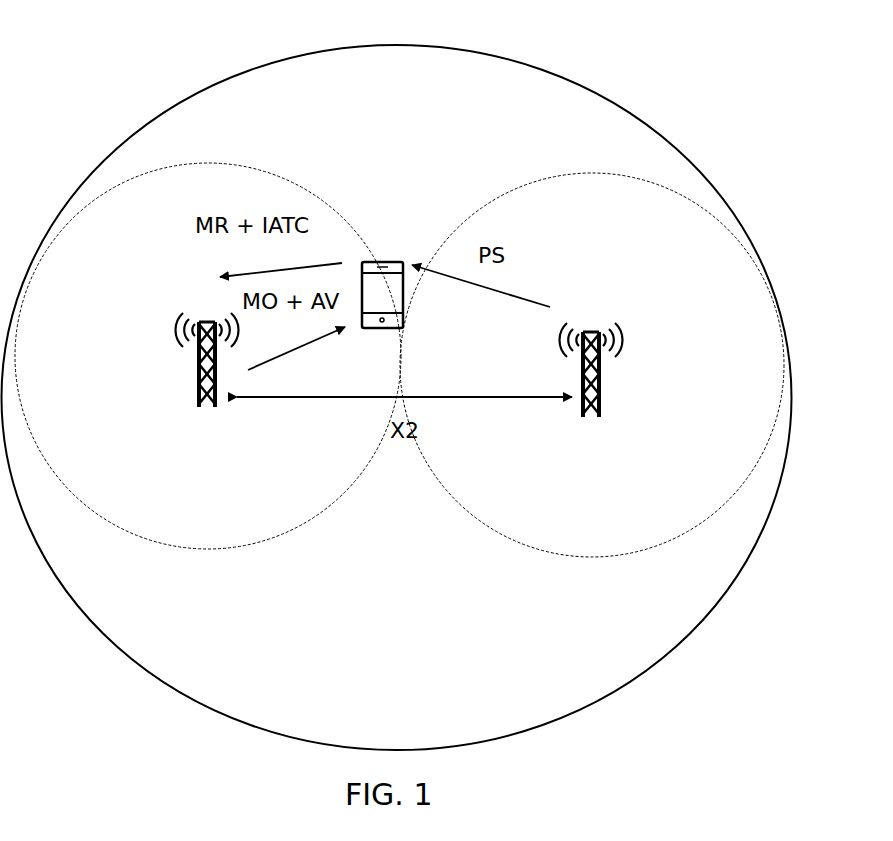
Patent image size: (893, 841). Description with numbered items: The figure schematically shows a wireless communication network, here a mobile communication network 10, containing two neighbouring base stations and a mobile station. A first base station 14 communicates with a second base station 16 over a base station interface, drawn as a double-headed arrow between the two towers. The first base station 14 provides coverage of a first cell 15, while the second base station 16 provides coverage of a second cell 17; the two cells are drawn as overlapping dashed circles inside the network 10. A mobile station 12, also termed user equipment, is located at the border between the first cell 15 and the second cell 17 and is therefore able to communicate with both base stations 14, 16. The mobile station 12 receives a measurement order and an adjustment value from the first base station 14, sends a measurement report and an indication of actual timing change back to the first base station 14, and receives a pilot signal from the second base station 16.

The mobile communication network 10 is at (697, 175).
The mobile station 12 is at (392, 256).
The first base station 14 is at (168, 370).
The first cell 15 is at (75, 502).
The second base station 16 is at (622, 380).
The second cell 17 is at (653, 540).